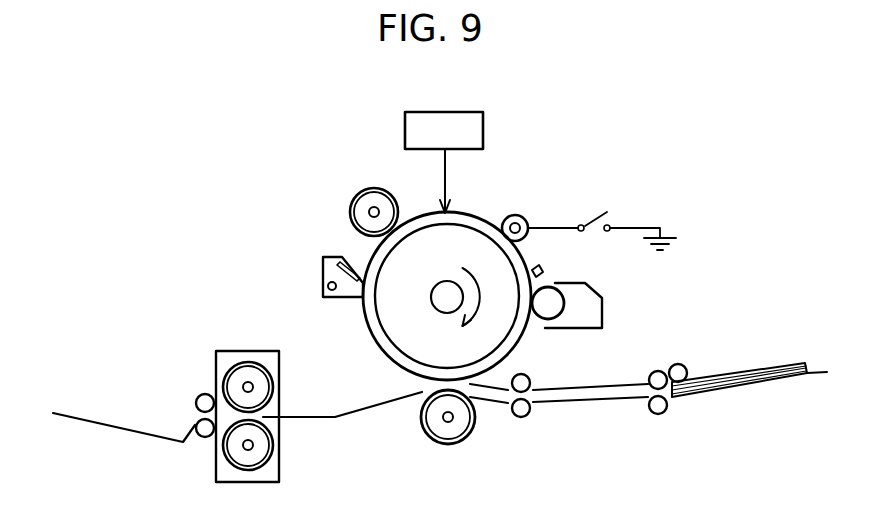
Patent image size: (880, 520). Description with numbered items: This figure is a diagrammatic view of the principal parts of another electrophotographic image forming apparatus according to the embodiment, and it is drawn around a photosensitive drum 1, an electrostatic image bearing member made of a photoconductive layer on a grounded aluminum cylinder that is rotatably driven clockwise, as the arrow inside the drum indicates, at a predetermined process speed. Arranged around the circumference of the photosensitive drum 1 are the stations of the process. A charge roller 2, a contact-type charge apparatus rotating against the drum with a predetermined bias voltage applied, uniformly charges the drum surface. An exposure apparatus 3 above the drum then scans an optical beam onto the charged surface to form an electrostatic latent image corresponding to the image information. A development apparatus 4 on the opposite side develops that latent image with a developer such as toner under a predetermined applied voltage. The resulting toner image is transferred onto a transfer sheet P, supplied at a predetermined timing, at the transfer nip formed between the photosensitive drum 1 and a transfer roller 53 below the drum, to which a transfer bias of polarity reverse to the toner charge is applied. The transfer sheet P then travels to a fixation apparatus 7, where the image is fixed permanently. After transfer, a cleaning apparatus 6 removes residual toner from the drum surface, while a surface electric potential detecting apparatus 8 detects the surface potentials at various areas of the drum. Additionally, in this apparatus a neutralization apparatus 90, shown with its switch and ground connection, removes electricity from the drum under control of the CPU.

The photosensitive drum 1 is at (477, 217).
The charge roller 2 is at (350, 208).
The exposure apparatus 3 is at (453, 112).
The development apparatus 4 is at (545, 320).
The cleaning apparatus 6 is at (323, 277).
The fixation apparatus 7 is at (241, 351).
The surface electric potential detecting apparatus 8 is at (543, 270).
The transfer roller 53 is at (443, 444).
The neutralization apparatus 90 is at (553, 228).
The transfer sheet P is at (735, 372).